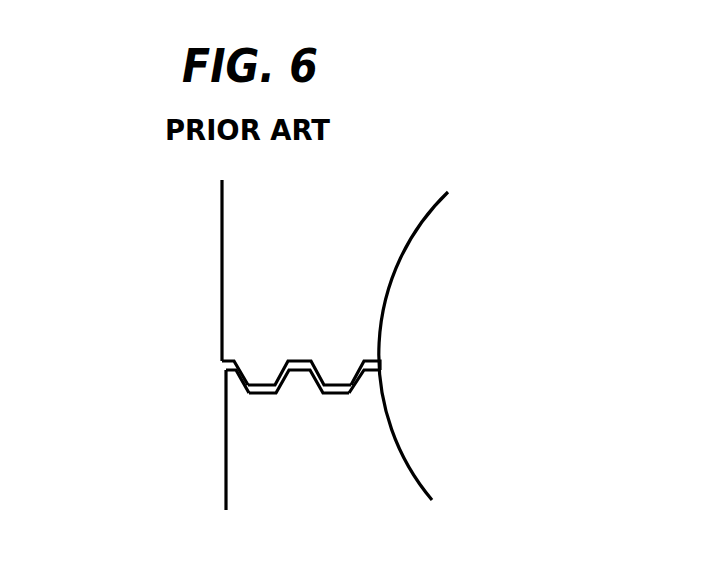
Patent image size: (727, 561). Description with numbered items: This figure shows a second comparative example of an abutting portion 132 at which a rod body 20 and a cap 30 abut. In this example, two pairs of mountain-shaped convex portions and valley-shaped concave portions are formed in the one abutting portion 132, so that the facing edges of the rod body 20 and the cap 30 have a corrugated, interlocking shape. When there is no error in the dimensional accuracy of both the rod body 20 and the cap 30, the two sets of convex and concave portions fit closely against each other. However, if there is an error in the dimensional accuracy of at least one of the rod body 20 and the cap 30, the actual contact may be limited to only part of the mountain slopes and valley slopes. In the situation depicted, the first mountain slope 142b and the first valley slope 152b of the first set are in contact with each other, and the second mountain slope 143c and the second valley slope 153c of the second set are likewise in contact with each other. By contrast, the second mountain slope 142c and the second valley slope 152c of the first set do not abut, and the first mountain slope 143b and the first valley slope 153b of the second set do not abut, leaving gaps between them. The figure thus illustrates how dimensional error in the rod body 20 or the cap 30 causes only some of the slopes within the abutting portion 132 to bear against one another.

The rod body 20 is at (221, 282).
The cap 30 is at (222, 443).
The abutting portion 132 is at (392, 358).
The first valley slope of the first set 152b is at (237, 366).
The second valley slope of the first set 152c is at (288, 360).
The first valley slope of the second set 153b is at (313, 360).
The second valley slope of the second set 153c is at (360, 368).
The first mountain slope of the first set 142b is at (240, 387).
The second mountain slope of the first set 142c is at (282, 394).
The first mountain slope of the second set 143b is at (322, 394).
The second mountain slope of the second set 143c is at (363, 389).